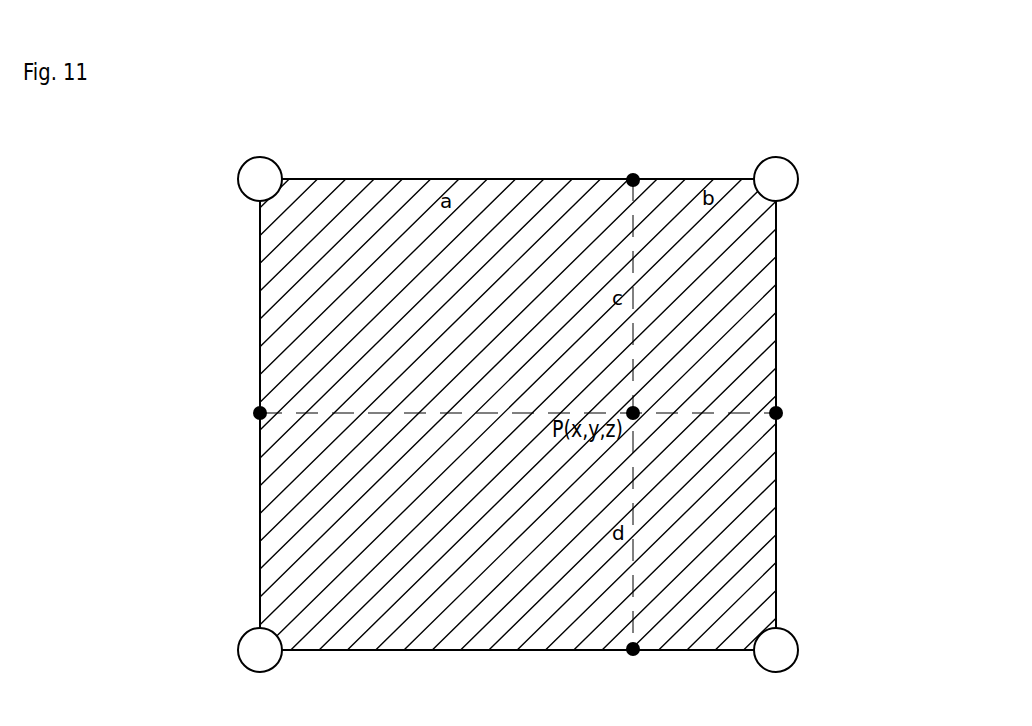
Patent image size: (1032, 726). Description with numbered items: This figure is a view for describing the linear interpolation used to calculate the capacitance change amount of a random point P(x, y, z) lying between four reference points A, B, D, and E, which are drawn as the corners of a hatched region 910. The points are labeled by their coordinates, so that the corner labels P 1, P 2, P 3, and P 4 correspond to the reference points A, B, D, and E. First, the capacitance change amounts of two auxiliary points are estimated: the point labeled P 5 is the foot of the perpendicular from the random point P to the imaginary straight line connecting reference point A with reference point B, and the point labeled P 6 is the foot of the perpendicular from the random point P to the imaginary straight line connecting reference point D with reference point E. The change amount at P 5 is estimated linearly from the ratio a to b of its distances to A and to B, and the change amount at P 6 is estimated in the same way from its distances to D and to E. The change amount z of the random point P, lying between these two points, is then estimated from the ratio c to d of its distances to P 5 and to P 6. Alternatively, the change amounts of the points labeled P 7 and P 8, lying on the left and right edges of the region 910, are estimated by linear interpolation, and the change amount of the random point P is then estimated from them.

The hatched rectangular plane region defined by points A, B, D, E 910 is at (760, 319).
The point P1 (vertex A) 1 is at (197, 179).
The point P2 (vertex B) 2 is at (837, 179).
The point P3 (vertex D) 3 is at (197, 650).
The point P4 (vertex E) 4 is at (836, 650).
The point P5 (top edge midpoint) 5 is at (632, 167).
The point P6 (bottom edge midpoint) 6 is at (632, 661).
The point P7 (left edge midpoint) 7 is at (199, 415).
The point P8 (right edge midpoint) 8 is at (837, 415).